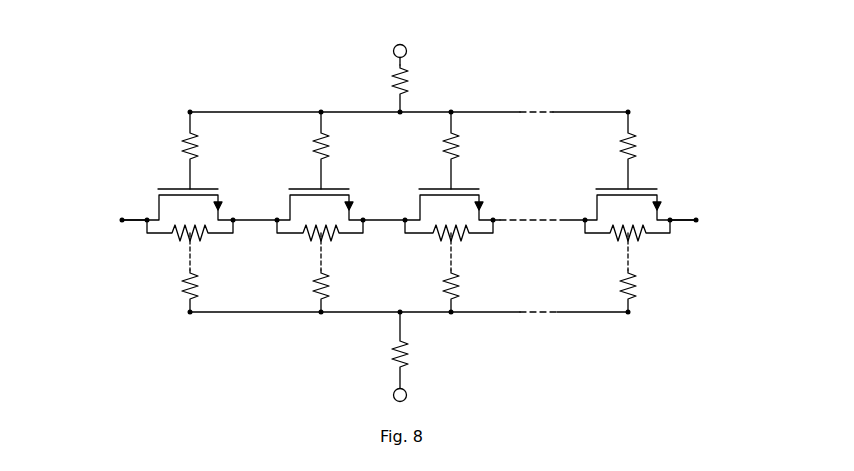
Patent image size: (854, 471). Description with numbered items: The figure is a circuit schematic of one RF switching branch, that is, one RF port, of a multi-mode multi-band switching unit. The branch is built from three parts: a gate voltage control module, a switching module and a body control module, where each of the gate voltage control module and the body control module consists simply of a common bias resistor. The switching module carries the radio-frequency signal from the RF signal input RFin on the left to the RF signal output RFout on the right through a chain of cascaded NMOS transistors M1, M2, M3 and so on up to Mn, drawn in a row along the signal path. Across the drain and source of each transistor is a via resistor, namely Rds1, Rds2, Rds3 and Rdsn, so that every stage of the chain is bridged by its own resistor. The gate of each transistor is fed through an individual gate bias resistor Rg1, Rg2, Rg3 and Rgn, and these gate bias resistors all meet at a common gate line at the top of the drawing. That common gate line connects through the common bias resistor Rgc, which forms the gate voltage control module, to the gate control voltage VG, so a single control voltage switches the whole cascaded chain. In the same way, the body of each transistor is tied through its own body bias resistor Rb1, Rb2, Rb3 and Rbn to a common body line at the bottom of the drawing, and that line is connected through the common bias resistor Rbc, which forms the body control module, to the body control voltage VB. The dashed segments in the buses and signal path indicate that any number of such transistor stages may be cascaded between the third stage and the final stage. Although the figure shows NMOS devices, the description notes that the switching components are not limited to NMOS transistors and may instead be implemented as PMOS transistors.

The RF signal input RFin is at (101, 221).
The RF signal output RFout is at (713, 221).
The gate control voltage VG is at (379, 54).
The body control voltage VB is at (417, 401).
The common bias resistor Rgc is at (422, 88).
The common bias resistor Rbc is at (425, 350).
The gate bias resistor Rg1 is at (208, 150).
The gate bias resistor Rg2 is at (339, 150).
The gate bias resistor Rg3 is at (469, 150).
The gate bias resistor Rgn is at (647, 150).
The NMOS transistor M1 is at (187, 193).
The NMOS transistor M2 is at (318, 193).
The NMOS transistor M3 is at (448, 193).
The NMOS transistor Mn is at (627, 193).
The via resistor Rds1 is at (197, 241).
The via resistor Rds2 is at (327, 241).
The via resistor Rds3 is at (456, 241).
The via resistor Rdsn is at (635, 241).
The body bias resistor Rb1 is at (207, 291).
The body bias resistor Rb2 is at (338, 291).
The body bias resistor Rb3 is at (468, 291).
The body bias resistor Rbn is at (646, 291).